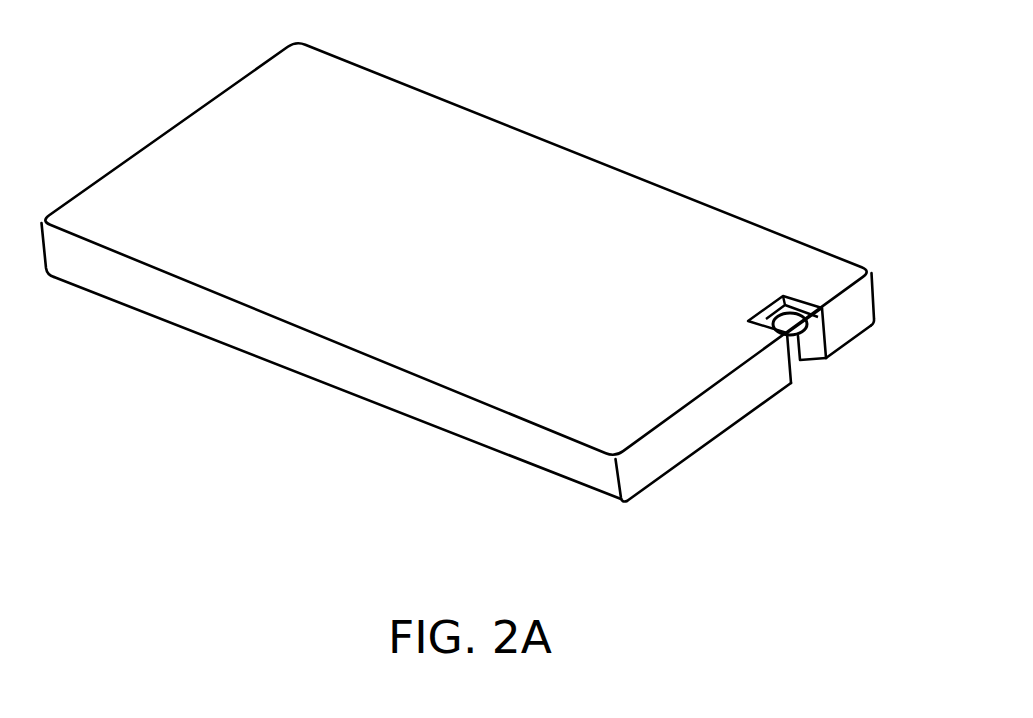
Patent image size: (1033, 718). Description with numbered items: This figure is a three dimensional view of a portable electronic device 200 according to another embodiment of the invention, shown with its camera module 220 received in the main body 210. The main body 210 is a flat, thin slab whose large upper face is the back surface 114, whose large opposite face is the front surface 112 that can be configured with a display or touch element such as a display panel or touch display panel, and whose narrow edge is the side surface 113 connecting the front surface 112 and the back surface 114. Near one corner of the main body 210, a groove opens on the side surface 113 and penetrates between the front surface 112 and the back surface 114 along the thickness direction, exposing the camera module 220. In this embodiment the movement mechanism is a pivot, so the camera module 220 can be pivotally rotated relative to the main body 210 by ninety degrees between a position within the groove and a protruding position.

The portable electronic device 200 is at (458, 296).
The main body 210 is at (458, 305).
The camera module 220 is at (803, 363).
The front surface 112 is at (507, 458).
The side surface 113 is at (678, 432).
The back surface 114 is at (580, 215).